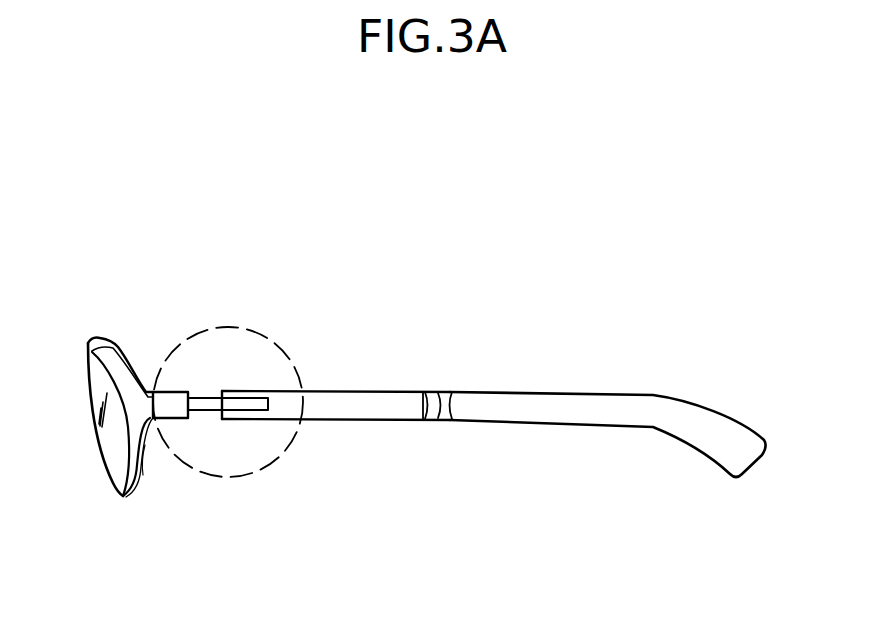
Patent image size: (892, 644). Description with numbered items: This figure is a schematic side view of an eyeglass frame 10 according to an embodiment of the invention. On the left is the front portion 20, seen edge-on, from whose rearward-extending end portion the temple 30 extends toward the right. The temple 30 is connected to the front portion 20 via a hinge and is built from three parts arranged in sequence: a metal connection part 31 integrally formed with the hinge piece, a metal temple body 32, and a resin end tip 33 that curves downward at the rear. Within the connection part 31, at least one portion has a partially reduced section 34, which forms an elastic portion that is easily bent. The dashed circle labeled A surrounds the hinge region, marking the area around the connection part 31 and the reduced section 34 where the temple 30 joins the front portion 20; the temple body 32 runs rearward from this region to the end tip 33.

The eyeglass frame 10 is at (538, 202).
The front portion 20 is at (123, 498).
The temple 30 is at (498, 248).
The connection part 31 is at (215, 392).
The temple body 32 is at (358, 392).
The end tip 33 is at (543, 392).
The reduced section 34 is at (197, 400).
The enlarged portion A is at (258, 473).